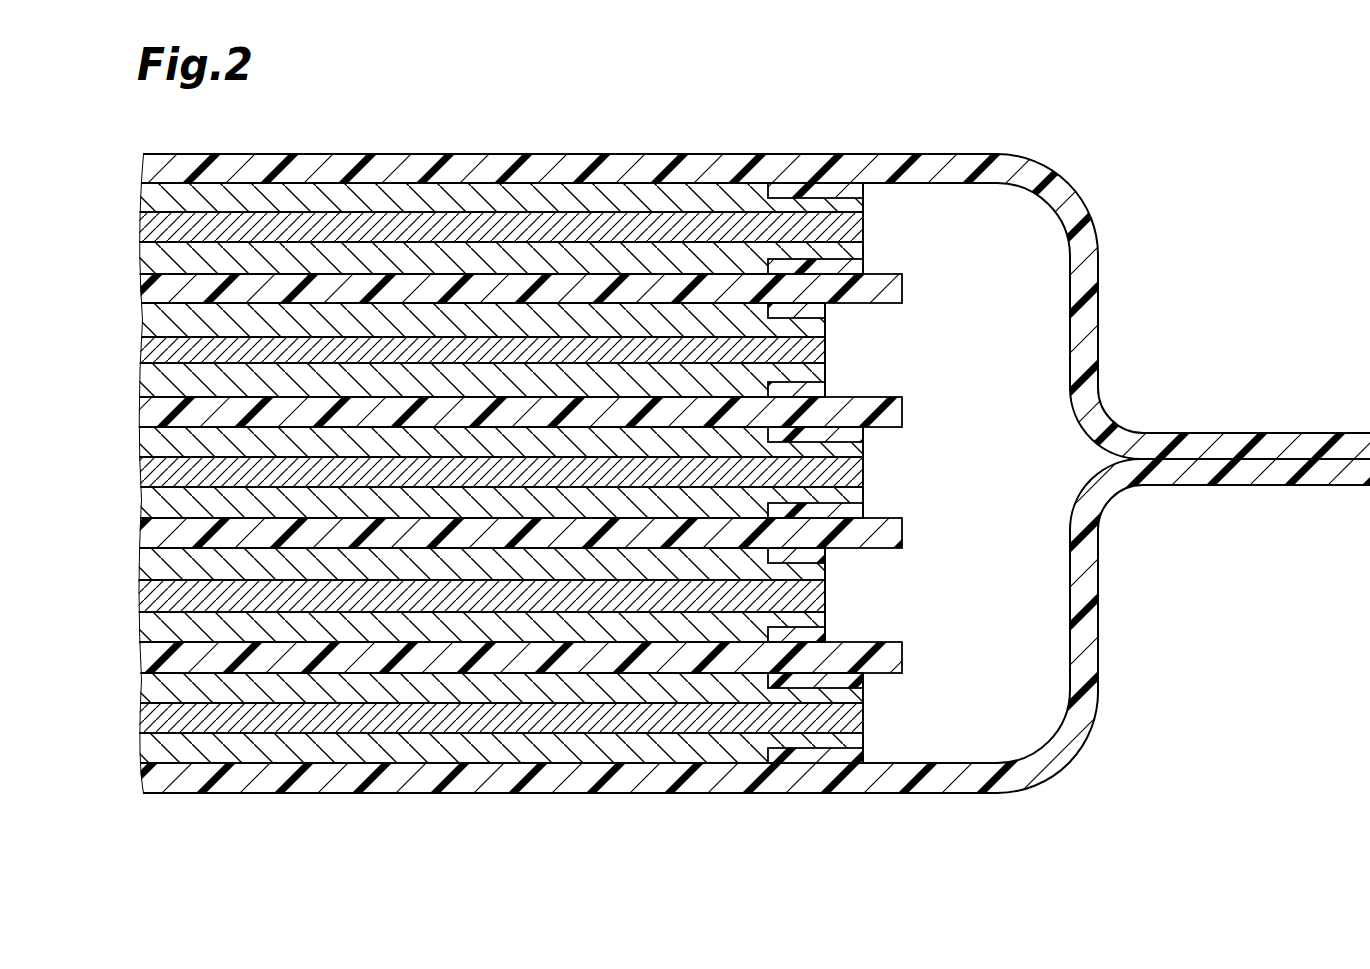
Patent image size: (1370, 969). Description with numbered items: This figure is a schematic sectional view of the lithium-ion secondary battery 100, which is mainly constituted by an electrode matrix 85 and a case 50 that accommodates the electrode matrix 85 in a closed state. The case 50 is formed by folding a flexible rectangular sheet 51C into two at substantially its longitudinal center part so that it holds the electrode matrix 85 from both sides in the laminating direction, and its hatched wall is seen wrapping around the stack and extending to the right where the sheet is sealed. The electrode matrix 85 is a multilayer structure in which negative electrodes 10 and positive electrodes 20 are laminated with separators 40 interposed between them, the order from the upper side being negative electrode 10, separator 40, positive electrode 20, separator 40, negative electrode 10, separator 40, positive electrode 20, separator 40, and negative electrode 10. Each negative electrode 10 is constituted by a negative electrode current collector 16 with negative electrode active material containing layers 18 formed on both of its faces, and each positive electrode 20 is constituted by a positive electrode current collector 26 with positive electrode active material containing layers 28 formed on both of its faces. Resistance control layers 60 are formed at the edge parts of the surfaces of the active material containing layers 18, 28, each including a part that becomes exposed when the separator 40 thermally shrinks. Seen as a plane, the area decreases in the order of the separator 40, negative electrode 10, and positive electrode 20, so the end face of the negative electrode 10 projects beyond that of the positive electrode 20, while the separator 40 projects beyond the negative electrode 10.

The lithium-ion secondary battery 100 is at (1198, 36).
The case 50 is at (843, 155).
The flexible rectangular sheet 51C is at (326, 158).
The electrode matrix 85 is at (1022, 220).
The negative electrode 10 is at (964, 187).
The positive electrode 20 is at (964, 303).
The separator 40 is at (897, 288).
The resistance control layer 60 is at (863, 190).
The negative electrode active material containing layer 18 is at (863, 205).
The negative electrode current collector 16 is at (863, 227).
The positive electrode active material containing layer 28 is at (825, 328).
The positive electrode current collector 26 is at (825, 350).